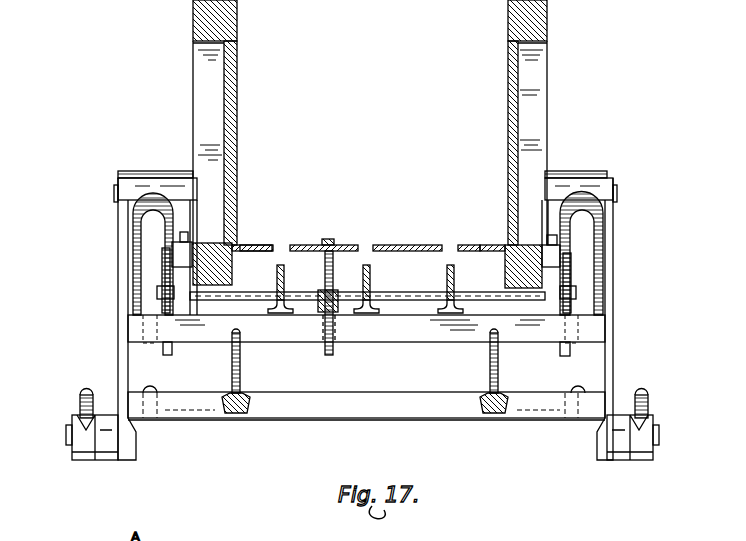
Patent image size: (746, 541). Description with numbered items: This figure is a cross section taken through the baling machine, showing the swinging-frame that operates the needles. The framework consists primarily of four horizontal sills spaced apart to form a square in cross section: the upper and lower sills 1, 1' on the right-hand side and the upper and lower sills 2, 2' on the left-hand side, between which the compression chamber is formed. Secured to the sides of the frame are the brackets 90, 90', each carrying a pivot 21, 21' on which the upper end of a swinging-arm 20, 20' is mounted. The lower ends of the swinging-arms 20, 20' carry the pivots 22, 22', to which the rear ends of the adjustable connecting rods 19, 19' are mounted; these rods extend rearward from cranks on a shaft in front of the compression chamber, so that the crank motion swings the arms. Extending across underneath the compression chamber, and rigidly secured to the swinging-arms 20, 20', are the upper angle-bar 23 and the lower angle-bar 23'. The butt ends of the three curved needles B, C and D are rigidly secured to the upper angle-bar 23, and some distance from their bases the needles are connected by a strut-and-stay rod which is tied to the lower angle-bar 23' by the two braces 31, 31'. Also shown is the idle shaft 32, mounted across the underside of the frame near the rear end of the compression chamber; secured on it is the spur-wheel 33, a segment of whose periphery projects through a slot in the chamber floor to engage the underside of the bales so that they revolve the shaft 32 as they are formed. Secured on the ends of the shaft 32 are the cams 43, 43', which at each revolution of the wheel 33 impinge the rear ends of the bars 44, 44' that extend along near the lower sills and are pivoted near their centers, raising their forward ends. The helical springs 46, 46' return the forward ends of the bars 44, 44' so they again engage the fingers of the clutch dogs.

The upper sill 1 is at (228, 122).
The upper sill 2 is at (509, 122).
The bracket 90 is at (155, 159).
The bracket 90' is at (576, 159).
The pivot 21 is at (132, 190).
The pivot 21' is at (606, 190).
The lower sill 1' is at (222, 242).
The lower sill 2' is at (513, 244).
The spur-wheel 33 is at (330, 240).
The bar 44 is at (124, 280).
The bar 44' is at (611, 272).
The cam 43 is at (126, 296).
The cam 43' is at (609, 280).
The swinging-arm 20 is at (135, 319).
The swinging-arm 20' is at (603, 319).
The helical spring 46 is at (174, 331).
The helical spring 46' is at (546, 333).
The upper angle-bar 23 is at (366, 328).
The lower angle-bar 23' is at (366, 403).
The brace 31 is at (218, 371).
The brace 31' is at (508, 371).
The idle shaft 32 is at (470, 292).
The adjustable connecting rod 19 is at (64, 399).
The adjustable connecting rod 19' is at (662, 398).
The pivot 22 is at (68, 437).
The pivot 22' is at (652, 437).
The needle B is at (277, 278).
The needle C is at (370, 278).
The needle D is at (447, 275).